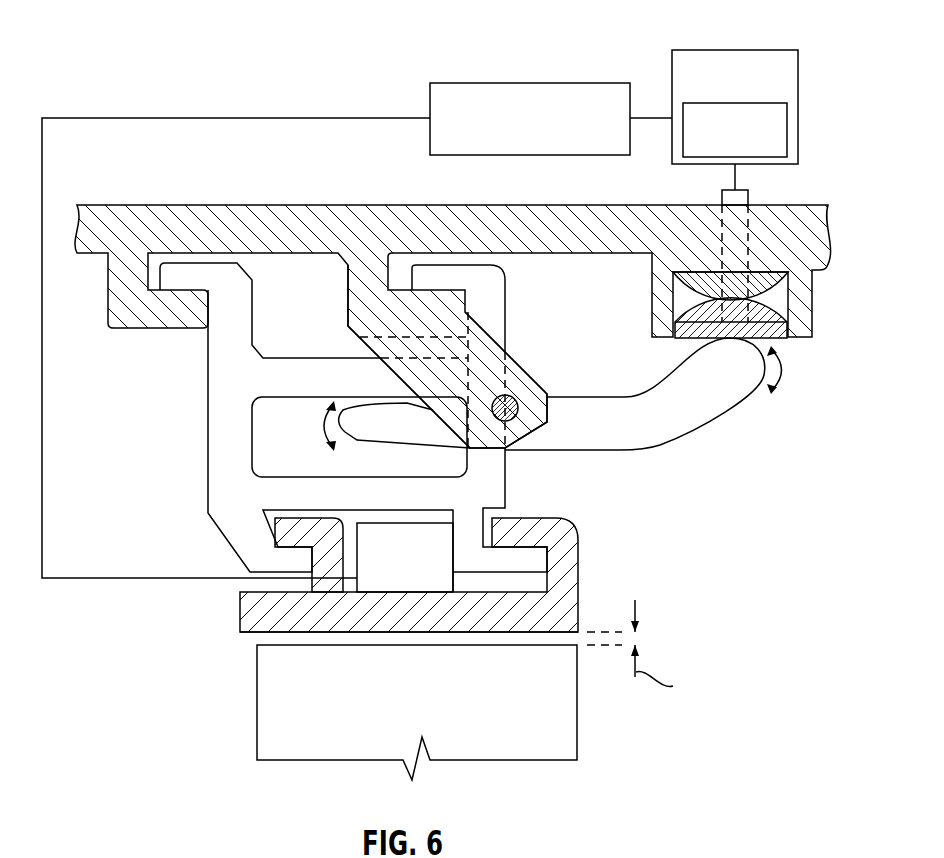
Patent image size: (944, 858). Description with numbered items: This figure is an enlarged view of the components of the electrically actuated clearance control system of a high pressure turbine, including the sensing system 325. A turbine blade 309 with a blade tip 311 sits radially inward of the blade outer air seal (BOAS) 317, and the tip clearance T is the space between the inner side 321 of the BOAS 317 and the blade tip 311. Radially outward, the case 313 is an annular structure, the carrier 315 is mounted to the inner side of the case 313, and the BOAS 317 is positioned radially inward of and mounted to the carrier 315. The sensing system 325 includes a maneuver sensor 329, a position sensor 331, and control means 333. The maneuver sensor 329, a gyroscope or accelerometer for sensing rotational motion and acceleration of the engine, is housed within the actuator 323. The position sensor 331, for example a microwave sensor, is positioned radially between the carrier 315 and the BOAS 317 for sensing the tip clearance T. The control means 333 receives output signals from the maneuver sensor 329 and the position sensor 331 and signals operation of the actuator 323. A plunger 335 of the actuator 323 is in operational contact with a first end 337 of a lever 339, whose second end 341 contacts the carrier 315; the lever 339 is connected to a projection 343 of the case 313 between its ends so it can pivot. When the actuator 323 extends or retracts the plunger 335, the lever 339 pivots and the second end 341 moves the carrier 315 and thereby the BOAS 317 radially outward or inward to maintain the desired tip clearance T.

The turbine blade 309 is at (428, 707).
The blade tip 311 is at (540, 643).
The case 313 is at (315, 240).
The carrier 315 is at (272, 494).
The blade outer air seal (BOAS) 317 is at (430, 628).
The inner side of BOAS 321 is at (250, 633).
The actuator 323 is at (798, 78).
The sensing system 325 is at (424, 104).
The maneuver sensor 329 is at (787, 128).
The position sensor 331 is at (430, 588).
The control means 333 is at (558, 83).
The plunger 335 is at (748, 197).
The first end of lever 337 is at (733, 385).
The lever 339 is at (641, 436).
The second end of lever 341 is at (357, 420).
The projection of case 343 is at (522, 369).